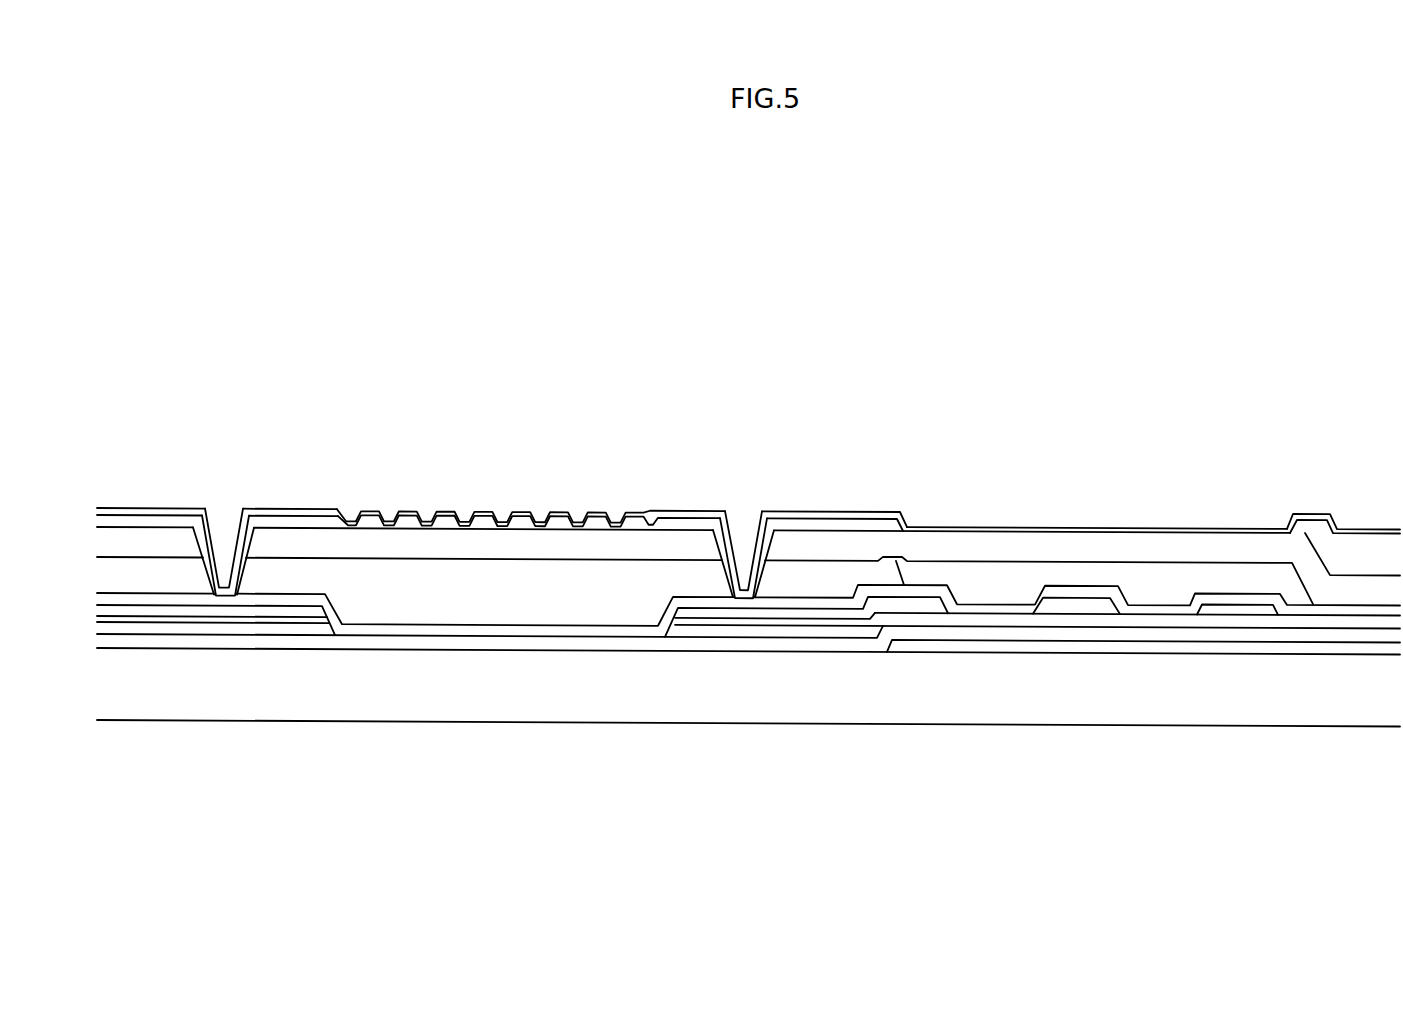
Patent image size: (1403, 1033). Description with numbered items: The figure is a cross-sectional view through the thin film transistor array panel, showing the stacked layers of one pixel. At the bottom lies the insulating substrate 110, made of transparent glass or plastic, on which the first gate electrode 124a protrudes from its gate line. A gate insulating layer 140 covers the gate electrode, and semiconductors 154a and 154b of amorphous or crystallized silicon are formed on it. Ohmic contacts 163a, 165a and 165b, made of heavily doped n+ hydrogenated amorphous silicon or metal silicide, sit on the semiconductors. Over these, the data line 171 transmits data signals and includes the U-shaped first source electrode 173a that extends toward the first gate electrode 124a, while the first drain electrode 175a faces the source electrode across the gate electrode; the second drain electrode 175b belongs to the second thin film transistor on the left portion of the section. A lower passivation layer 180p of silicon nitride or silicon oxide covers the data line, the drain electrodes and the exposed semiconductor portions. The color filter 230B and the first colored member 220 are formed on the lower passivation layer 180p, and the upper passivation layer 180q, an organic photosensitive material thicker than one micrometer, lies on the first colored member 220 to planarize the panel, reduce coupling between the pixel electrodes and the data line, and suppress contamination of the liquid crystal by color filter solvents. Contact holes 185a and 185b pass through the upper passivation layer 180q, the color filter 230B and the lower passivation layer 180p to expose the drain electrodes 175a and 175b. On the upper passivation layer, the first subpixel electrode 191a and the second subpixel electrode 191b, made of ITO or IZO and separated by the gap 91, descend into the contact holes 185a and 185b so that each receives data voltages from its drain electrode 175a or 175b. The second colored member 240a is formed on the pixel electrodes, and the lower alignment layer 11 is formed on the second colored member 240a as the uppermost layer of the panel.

The lower alignment layer 11 is at (829, 515).
The gap 91 is at (347, 516).
The insulating substrate 110 is at (460, 698).
The first gate electrode 124a is at (928, 639).
The gate insulating layer 140 is at (515, 640).
The semiconductor 154a is at (688, 630).
The semiconductor 154b is at (184, 630).
The ohmic contact 163a is at (1061, 608).
The ohmic contact 165a is at (729, 620).
The ohmic contact 165b is at (228, 619).
The data line 171 is at (1238, 604).
The first source electrode 173a is at (1091, 599).
The first drain electrode 175a is at (767, 612).
The second drain electrode 175b is at (275, 612).
The lower passivation layer 180p is at (584, 630).
The upper passivation layer 180q is at (118, 540).
The contact hole 185a is at (768, 542).
The contact hole 185b is at (200, 544).
The first subpixel electrode 191a is at (643, 514).
The second subpixel electrode 191b is at (293, 521).
The first colored member 220 is at (994, 574).
The color filter 230B is at (119, 578).
The second colored member 240a is at (1367, 546).